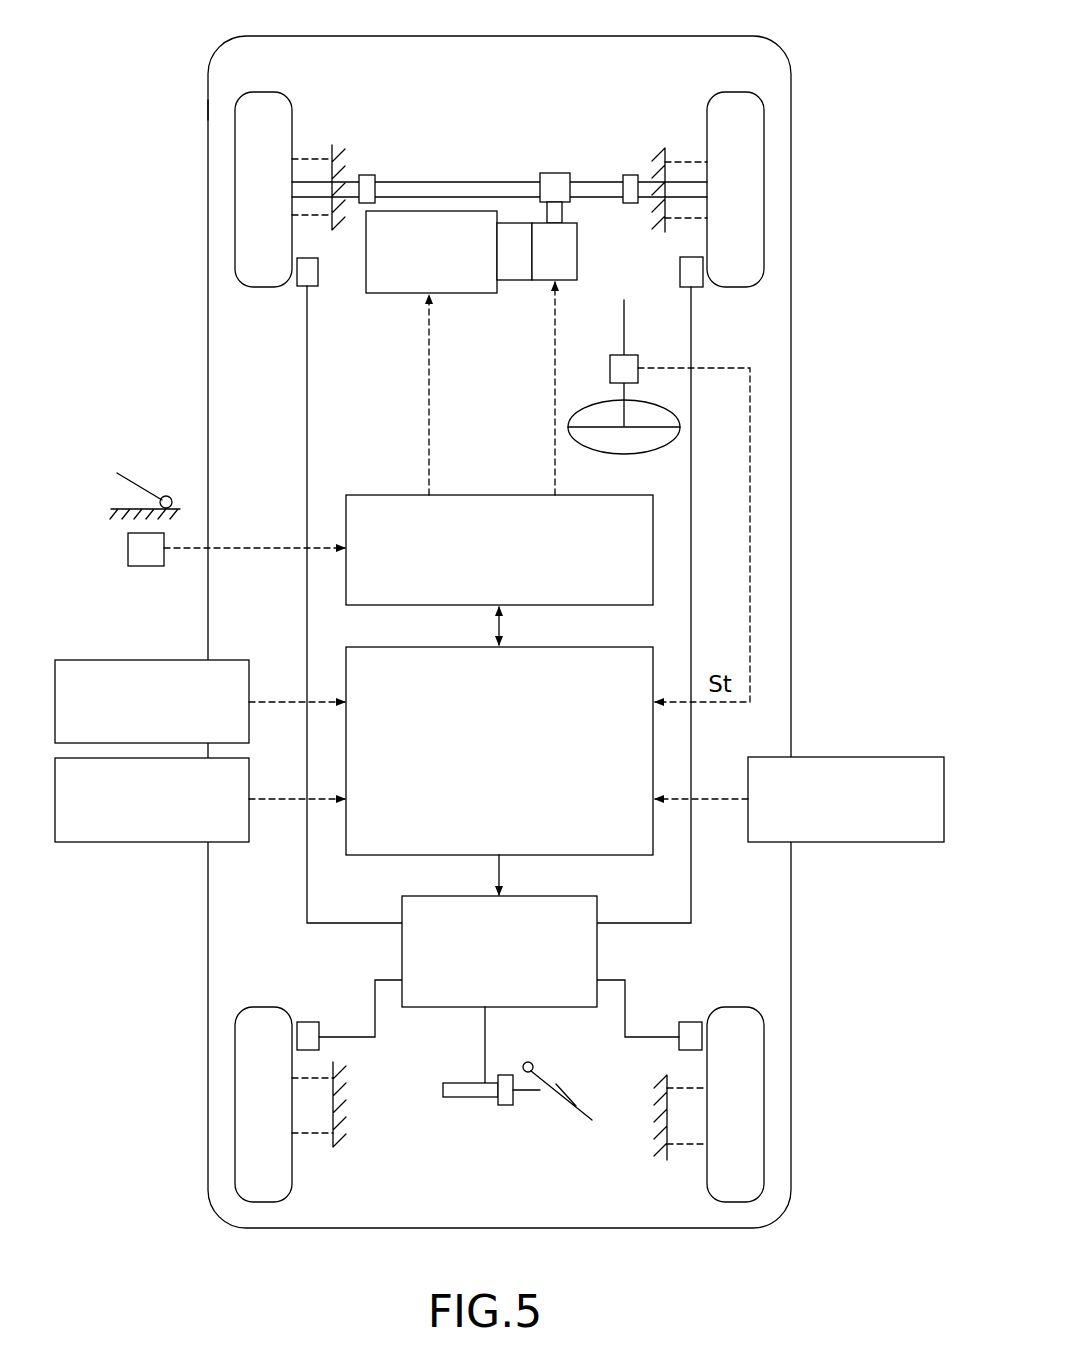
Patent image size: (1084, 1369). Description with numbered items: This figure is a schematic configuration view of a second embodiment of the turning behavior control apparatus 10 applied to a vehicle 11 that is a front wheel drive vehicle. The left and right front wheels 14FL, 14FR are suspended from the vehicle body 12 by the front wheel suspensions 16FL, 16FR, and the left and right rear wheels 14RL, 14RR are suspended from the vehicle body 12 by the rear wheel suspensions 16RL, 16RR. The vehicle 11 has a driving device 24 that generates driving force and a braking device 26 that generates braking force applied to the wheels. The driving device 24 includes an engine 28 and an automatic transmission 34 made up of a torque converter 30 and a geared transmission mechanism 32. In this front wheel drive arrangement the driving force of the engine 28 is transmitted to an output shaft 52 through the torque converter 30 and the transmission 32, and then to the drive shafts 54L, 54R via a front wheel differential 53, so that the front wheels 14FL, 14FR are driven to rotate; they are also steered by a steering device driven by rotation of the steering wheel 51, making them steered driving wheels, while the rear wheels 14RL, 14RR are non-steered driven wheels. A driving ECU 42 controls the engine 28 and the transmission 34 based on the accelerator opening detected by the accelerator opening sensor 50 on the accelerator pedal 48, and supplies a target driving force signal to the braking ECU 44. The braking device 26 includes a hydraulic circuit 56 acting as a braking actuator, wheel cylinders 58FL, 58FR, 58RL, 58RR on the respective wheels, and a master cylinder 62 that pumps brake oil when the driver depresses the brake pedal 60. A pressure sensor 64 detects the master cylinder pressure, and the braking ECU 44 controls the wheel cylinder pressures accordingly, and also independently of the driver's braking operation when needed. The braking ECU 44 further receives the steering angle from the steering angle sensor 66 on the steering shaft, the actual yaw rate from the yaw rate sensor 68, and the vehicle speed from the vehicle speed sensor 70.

The turning behavior control apparatus 10 is at (625, 62).
The vehicle 11 is at (208, 62).
The vehicle body 12 is at (347, 168).
The left front wheel 14FL is at (236, 185).
The right front wheel 14FR is at (765, 187).
The left rear wheel 14RL is at (237, 1103).
The right rear wheel 14RR is at (765, 1106).
The front wheel suspension 16FL is at (316, 158).
The front wheel suspension 16FR is at (692, 218).
The rear wheel suspension 16RL is at (315, 1134).
The rear wheel suspension 16RR is at (682, 1145).
The driving device 24 is at (401, 309).
The braking device 26 is at (508, 1084).
The engine 28 is at (431, 252).
The torque converter 30 is at (513, 269).
The geared transmission mechanism 32 is at (567, 265).
The automatic transmission 34 is at (486, 228).
The driving electronic control unit 42 is at (499, 550).
The braking electronic control unit 44 is at (499, 751).
The accelerator pedal 48 is at (140, 484).
The accelerator opening sensor 50 is at (128, 549).
The steering wheel 51 is at (582, 408).
The output shaft 52 is at (563, 217).
The front wheel differential 53 is at (555, 180).
The drive shaft 54L is at (447, 184).
The drive shaft 54R is at (612, 184).
The hydraulic circuit 56 is at (499, 951).
The wheel cylinder 58FL is at (302, 288).
The wheel cylinder 58FR is at (695, 288).
The wheel cylinder 58RL is at (308, 1022).
The wheel cylinder 58RR is at (690, 1022).
The brake pedal 60 is at (582, 1096).
The master cylinder 62 is at (458, 1082).
The pressure sensor 64 is at (140, 660).
The steering angle sensor 66 is at (640, 365).
The yaw rate sensor 68 is at (128, 843).
The vehicle speed sensor 70 is at (862, 757).